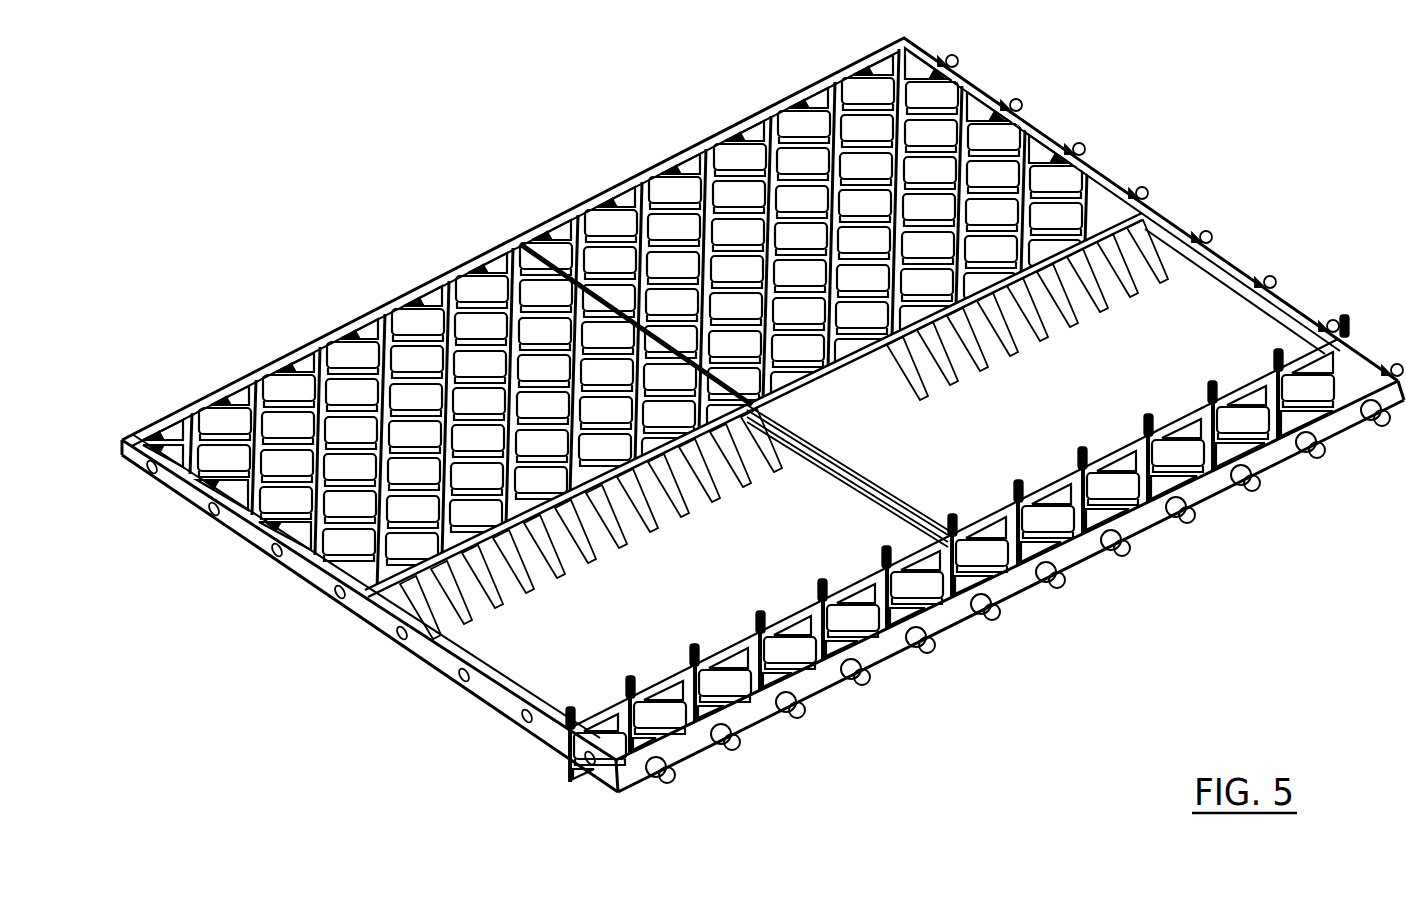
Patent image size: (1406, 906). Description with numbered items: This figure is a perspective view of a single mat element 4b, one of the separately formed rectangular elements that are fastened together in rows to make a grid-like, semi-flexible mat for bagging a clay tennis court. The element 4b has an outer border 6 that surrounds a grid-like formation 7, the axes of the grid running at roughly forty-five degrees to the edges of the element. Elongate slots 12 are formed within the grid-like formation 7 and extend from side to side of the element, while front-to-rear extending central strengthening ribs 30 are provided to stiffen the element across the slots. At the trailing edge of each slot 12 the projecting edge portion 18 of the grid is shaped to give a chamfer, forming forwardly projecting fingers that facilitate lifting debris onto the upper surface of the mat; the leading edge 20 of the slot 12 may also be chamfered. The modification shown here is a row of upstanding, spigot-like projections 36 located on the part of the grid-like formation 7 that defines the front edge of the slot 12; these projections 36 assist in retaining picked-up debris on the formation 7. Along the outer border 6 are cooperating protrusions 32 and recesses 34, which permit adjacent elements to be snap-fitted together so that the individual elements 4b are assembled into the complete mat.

The mat element 4b is at (1400, 283).
The outer border 6 is at (1218, 276).
The grid-like formation 7 is at (1003, 152).
The elongate slot 12 is at (822, 511).
The projecting edge portion 18 is at (700, 492).
The leading edge 20 is at (1243, 392).
The central strengthening rib 30 is at (826, 484).
The protrusion 32 is at (1068, 592).
The recess 34 is at (462, 684).
The upstanding projection 36 is at (1080, 478).